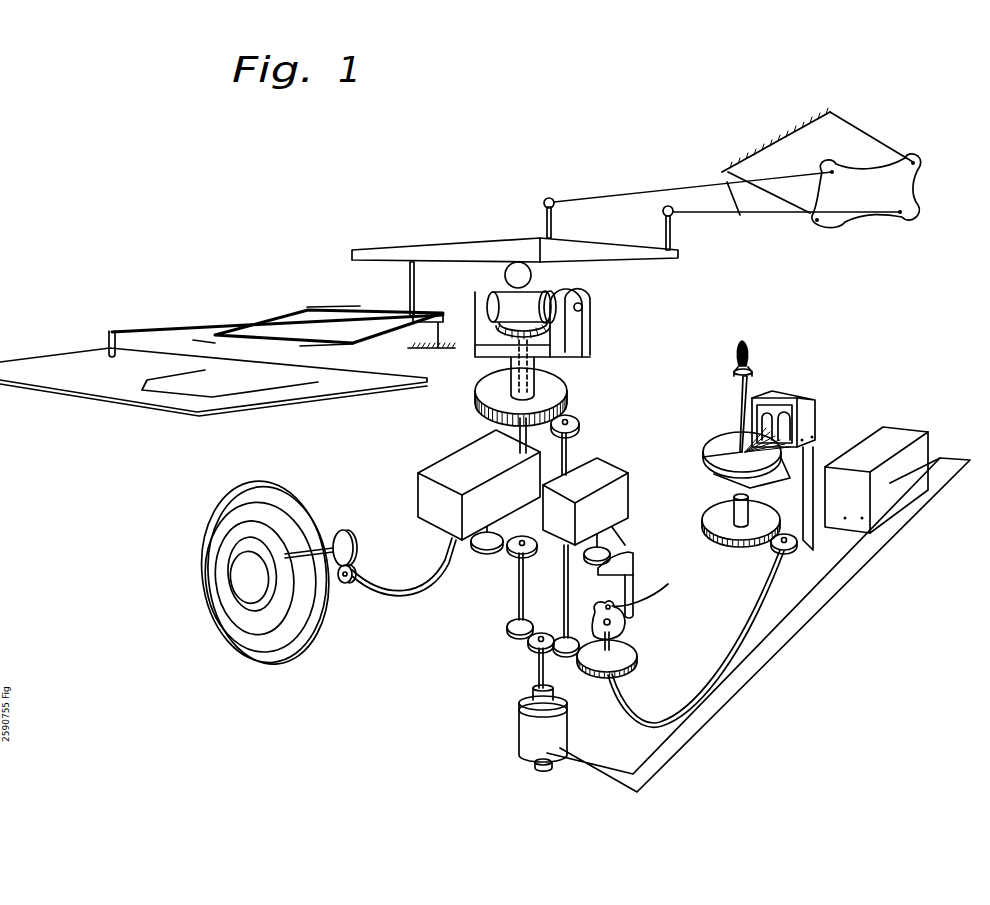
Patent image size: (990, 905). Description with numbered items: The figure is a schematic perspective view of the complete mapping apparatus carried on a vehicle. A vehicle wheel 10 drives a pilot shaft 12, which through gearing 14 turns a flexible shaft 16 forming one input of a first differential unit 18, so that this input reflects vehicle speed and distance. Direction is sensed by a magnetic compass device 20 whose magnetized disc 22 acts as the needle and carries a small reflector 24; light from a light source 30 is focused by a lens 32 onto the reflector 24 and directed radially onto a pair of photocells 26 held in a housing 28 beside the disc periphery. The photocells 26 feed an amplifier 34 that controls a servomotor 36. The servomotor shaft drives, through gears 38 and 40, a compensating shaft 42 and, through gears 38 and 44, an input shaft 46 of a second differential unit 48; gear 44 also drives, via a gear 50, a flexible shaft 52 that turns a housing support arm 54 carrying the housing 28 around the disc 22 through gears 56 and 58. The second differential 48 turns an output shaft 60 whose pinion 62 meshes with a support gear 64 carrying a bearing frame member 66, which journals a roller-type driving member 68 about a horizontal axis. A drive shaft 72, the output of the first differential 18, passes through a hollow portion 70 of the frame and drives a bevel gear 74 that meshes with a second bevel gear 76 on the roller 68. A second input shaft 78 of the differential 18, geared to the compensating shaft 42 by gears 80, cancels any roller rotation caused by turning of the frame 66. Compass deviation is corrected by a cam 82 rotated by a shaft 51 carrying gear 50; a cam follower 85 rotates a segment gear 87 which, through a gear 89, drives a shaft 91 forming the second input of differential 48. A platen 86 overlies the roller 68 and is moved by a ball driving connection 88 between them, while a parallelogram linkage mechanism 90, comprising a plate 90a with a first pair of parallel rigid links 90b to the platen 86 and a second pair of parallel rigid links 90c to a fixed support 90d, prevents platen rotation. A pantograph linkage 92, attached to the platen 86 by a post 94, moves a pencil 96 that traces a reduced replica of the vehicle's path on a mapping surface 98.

The wheel 10 is at (305, 634).
The pilot shaft 12 is at (334, 530).
The gearing 14 is at (355, 553).
The flexible shaft 16 is at (421, 591).
The differential unit 18 is at (425, 468).
The magnetic compass device 20 is at (697, 460).
The magnetized disc 22 is at (722, 474).
The reflector 24 is at (708, 471).
The photocells 26 is at (787, 408).
The housing 28 is at (815, 417).
The light source 30 is at (751, 355).
The lens 32 is at (753, 371).
The amplifier 34 is at (912, 430).
The servomotor 36 is at (518, 730).
The gear 38 is at (530, 647).
The gear 40 is at (507, 632).
The compensating shaft 42 is at (518, 602).
The gear 44 is at (572, 657).
The input shaft 46 is at (571, 591).
The second differential unit 48 is at (627, 507).
The gear 50 is at (637, 659).
The shaft 51 is at (627, 636).
The flexible shaft 52 is at (636, 704).
The housing support arm 54 is at (766, 489).
The gear 56 is at (778, 552).
The gear 58 is at (745, 548).
The output shaft 60 is at (571, 453).
The pinion 62 is at (579, 424).
The support gear 64 is at (567, 385).
The bearing frame member 66 is at (590, 352).
The driving member 68 is at (500, 316).
The hollow portion 70 is at (490, 392).
The drive shaft 72 is at (512, 437).
The bevel gear 74 is at (585, 333).
The second bevel gear 76 is at (548, 320).
The second input shaft 78 is at (487, 552).
The gears 80 is at (521, 556).
The cam 82 is at (600, 616).
The cam follower 85 is at (651, 590).
The platen 86 is at (655, 256).
The segment gear 87 is at (640, 558).
The ball driving connection 88 is at (503, 278).
The gear 89 is at (592, 558).
The parallelogram linkage mechanism 90 is at (887, 222).
The plate 90a is at (892, 188).
The link 90b is at (735, 214).
The second pair of parallel rigid links 90c is at (880, 146).
The fixed support 90d is at (793, 141).
The shaft 91 is at (608, 526).
The pantograph linkage 92 is at (282, 316).
The post 94 is at (410, 290).
The pencil 96 is at (107, 343).
The mapping surface 98 is at (292, 396).